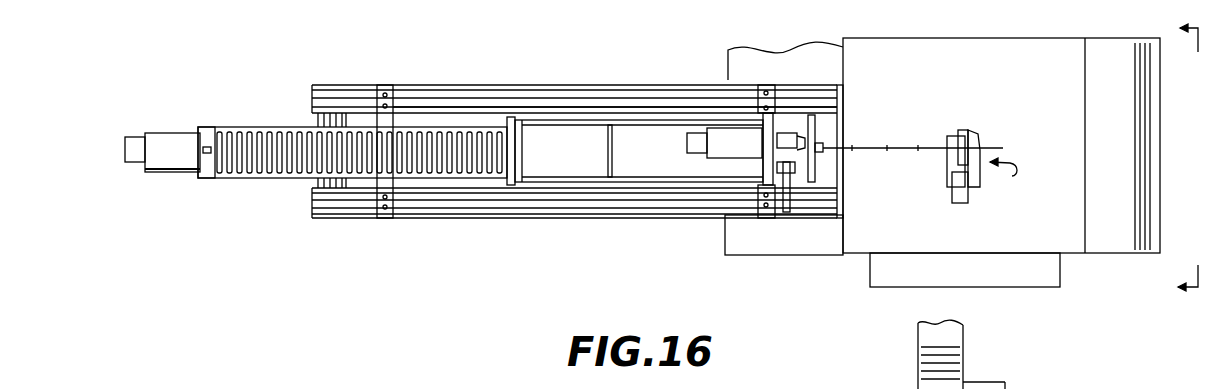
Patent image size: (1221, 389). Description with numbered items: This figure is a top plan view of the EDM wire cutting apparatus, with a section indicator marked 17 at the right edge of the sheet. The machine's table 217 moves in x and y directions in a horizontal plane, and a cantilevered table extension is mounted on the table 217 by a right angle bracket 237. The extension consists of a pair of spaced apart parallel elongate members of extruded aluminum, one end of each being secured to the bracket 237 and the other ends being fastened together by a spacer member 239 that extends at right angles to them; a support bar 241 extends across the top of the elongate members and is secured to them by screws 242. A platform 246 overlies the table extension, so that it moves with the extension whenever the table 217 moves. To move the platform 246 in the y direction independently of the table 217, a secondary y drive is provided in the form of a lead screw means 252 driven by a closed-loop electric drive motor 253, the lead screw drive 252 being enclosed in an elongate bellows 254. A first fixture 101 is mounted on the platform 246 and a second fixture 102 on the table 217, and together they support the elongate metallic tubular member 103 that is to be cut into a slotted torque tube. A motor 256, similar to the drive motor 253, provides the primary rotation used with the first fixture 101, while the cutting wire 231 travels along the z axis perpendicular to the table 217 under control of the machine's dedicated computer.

The electric drive motor 253 is at (165, 135).
The lead screw means 252 is at (208, 150).
The elongate bellows 254 is at (258, 178).
The platform 246 is at (602, 186).
The spacer member 239 is at (310, 187).
The screws 242 is at (385, 97).
The support bar 241 is at (410, 106).
The motor 256 is at (730, 140).
The first fixture 101 is at (843, 118).
The right angle bracket 237 is at (840, 82).
The table 217 is at (1020, 95).
The tubular member 103 is at (918, 152).
The second fixture 102 is at (992, 166).
The wire 231 is at (965, 348).
The section line 17 is at (1199, 160).